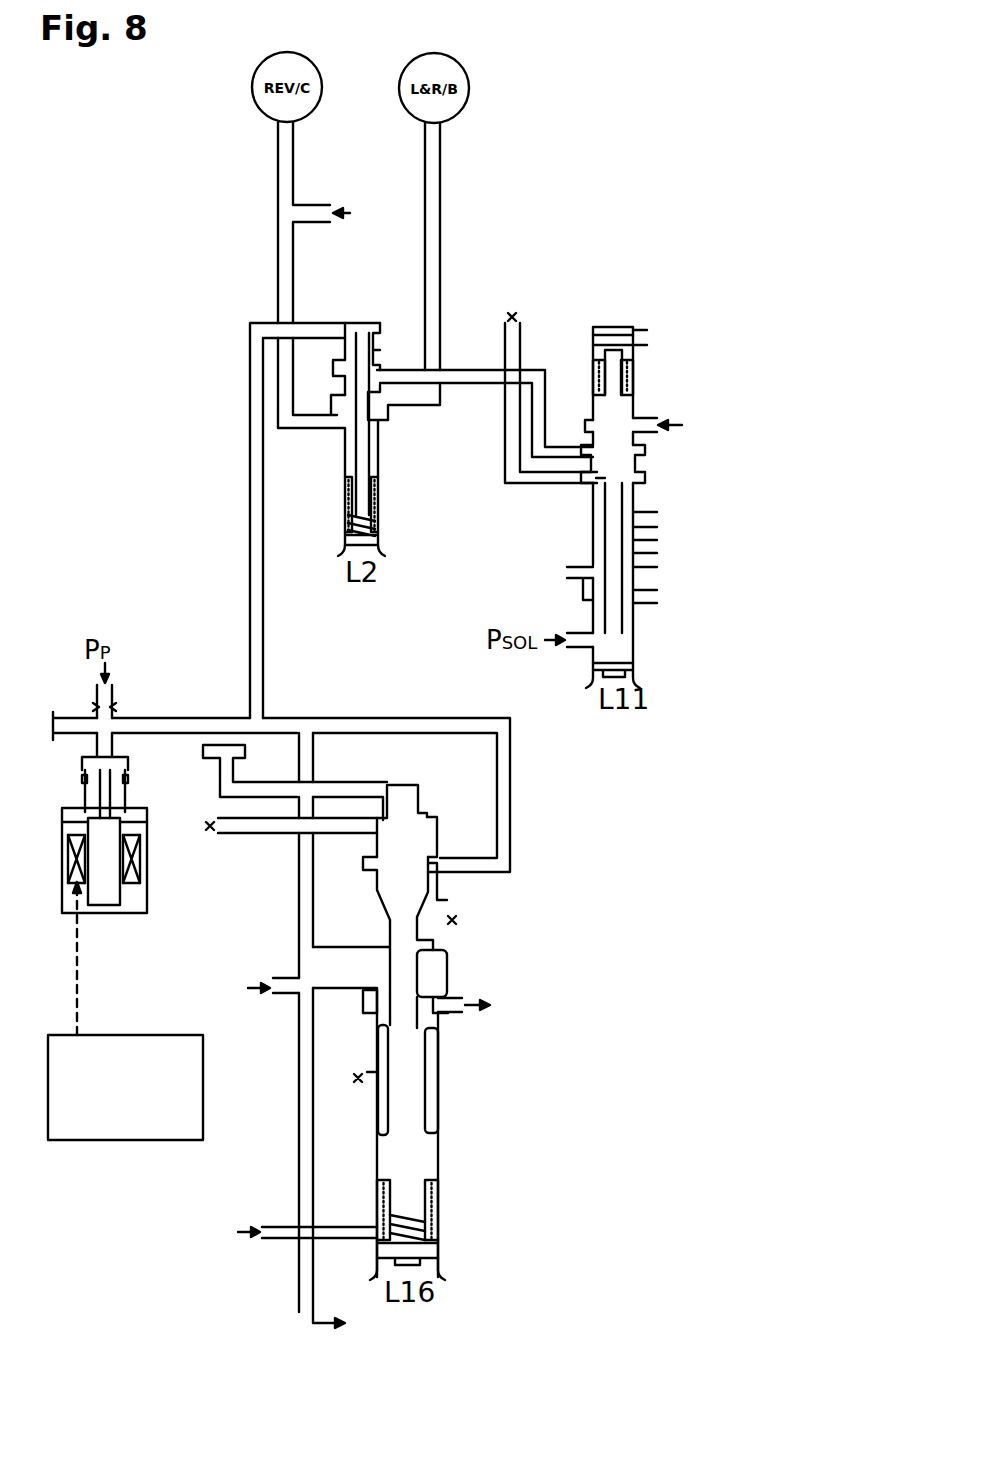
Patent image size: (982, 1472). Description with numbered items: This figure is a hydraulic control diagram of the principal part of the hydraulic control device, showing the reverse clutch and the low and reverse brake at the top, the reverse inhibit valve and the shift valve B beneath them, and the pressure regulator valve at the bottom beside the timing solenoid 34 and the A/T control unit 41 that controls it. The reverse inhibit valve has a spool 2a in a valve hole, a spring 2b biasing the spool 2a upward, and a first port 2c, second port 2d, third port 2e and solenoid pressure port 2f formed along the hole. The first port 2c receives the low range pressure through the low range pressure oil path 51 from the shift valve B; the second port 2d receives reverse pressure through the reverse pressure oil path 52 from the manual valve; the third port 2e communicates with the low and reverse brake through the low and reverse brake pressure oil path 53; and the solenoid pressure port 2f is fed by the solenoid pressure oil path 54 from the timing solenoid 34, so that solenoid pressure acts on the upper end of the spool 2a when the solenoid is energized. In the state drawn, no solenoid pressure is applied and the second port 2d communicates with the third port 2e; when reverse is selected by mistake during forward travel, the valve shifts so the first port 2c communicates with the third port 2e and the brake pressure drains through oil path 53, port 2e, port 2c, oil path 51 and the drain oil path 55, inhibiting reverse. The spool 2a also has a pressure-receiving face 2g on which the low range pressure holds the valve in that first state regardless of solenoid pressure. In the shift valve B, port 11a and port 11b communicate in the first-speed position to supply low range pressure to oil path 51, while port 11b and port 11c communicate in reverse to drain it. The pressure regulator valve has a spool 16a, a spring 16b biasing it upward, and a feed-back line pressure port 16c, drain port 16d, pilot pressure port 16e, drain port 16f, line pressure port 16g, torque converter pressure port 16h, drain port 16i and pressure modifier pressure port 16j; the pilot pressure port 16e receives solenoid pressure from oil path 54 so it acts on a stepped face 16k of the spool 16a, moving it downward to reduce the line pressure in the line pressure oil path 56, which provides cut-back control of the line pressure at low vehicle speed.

The spool 2a is at (372, 460).
The spring 2b is at (377, 497).
The first port 2c is at (336, 375).
The second port 2d is at (338, 422).
The third port 2e is at (384, 402).
The solenoid pressure port 2f is at (350, 330).
The pressure-receiving face 2g is at (378, 365).
The port 11a is at (638, 413).
The port 11b is at (646, 456).
The port 11c is at (597, 480).
The spool 16a is at (415, 1108).
The spring 16b is at (432, 1232).
The feed-back line pressure port 16c is at (382, 788).
The drain port 16d is at (433, 817).
The pilot pressure port 16e is at (440, 868).
The drain port 16f is at (445, 932).
The line pressure port 16g is at (448, 970).
The torque converter pressure port 16h is at (452, 1014).
The drain port 16i is at (376, 1082).
The pressure modifier pressure port 16j is at (372, 1228).
The stepped face 16k is at (431, 864).
The timing solenoid 34 is at (147, 862).
The A/T control unit 41 is at (112, 1140).
The low range pressure oil path 51 is at (478, 388).
The reverse pressure oil path 52 is at (293, 268).
The low & reverse brake pressure oil path 53 is at (440, 228).
The solenoid pressure oil path 54 is at (248, 530).
The drain oil path 55 is at (510, 486).
The line pressure oil path 56 is at (297, 1138).